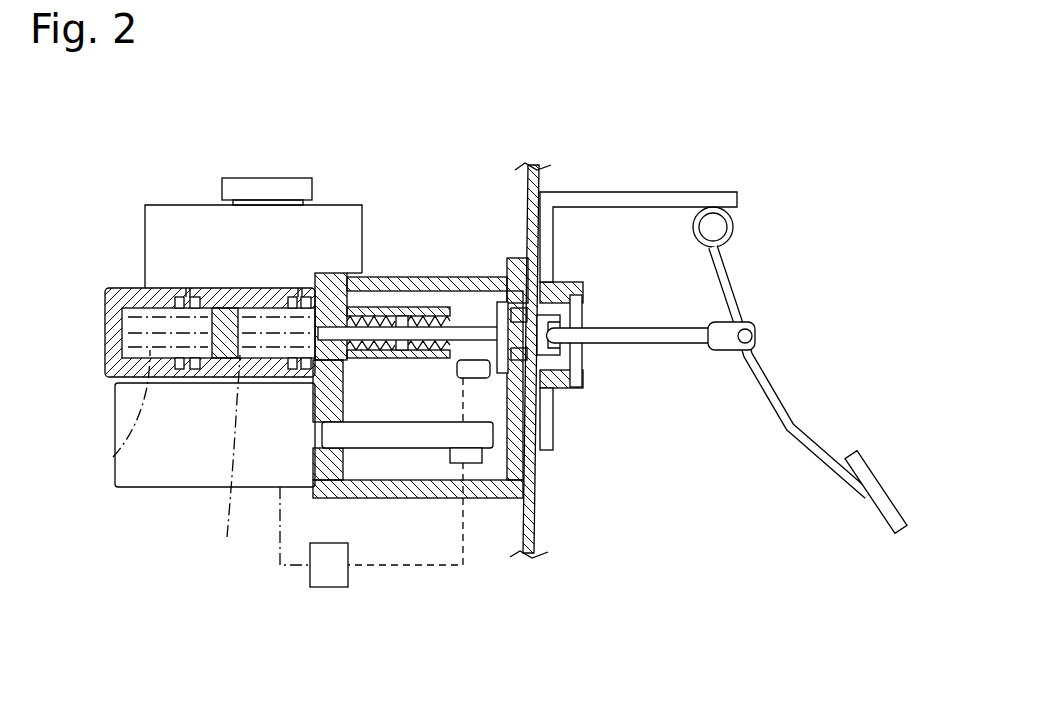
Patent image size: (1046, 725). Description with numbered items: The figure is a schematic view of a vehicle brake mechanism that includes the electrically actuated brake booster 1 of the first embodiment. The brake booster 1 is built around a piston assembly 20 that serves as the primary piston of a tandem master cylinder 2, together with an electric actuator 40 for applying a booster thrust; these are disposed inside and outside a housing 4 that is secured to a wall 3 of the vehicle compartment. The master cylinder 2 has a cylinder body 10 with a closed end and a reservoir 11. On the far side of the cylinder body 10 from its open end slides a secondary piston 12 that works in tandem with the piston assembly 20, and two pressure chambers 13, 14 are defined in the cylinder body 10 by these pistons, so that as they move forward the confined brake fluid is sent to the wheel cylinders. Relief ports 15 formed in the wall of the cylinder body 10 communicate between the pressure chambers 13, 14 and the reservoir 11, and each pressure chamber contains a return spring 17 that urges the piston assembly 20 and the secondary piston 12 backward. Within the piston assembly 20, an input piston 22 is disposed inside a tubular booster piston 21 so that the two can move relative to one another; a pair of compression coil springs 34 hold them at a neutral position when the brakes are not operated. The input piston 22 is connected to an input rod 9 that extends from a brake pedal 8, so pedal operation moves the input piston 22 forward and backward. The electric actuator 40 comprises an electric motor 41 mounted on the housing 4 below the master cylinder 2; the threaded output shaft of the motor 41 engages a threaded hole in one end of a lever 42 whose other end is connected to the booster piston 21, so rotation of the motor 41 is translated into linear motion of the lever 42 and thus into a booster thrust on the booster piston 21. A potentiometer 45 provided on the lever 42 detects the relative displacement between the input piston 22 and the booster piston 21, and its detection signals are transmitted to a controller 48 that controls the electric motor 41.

The electrically actuated brake booster 1 is at (462, 255).
The tandem master cylinder 2 is at (107, 258).
The wall of a vehicle compartment 3 is at (533, 163).
The housing 4 is at (485, 498).
The brake pedal 8 is at (790, 430).
The input rod 9 is at (653, 344).
The cylinder body 10 is at (160, 293).
The reservoir 11 is at (203, 217).
The secondary piston 12 is at (224, 356).
The pressure chamber 13 is at (270, 337).
The pressure chamber 14 is at (140, 337).
The relief port 15 is at (195, 294).
The return spring 17 is at (113, 457).
The piston assembly 20 is at (420, 292).
The booster piston 21 is at (360, 268).
The input piston 22 is at (468, 330).
The springs 34 is at (406, 357).
The electric actuator 40 is at (403, 450).
The electric motor 41 is at (133, 478).
The lever 42 is at (530, 500).
The potentiometer 45 is at (476, 378).
The controller 48 is at (328, 582).